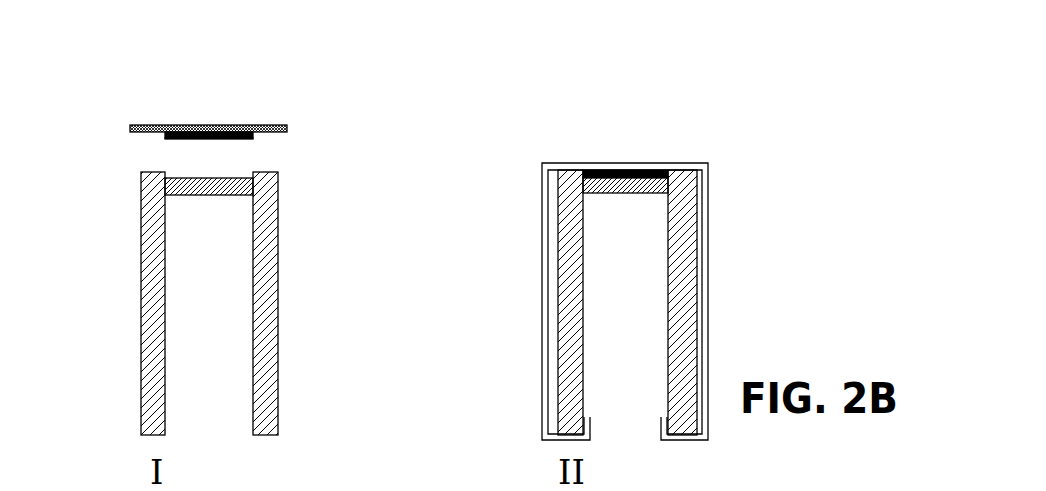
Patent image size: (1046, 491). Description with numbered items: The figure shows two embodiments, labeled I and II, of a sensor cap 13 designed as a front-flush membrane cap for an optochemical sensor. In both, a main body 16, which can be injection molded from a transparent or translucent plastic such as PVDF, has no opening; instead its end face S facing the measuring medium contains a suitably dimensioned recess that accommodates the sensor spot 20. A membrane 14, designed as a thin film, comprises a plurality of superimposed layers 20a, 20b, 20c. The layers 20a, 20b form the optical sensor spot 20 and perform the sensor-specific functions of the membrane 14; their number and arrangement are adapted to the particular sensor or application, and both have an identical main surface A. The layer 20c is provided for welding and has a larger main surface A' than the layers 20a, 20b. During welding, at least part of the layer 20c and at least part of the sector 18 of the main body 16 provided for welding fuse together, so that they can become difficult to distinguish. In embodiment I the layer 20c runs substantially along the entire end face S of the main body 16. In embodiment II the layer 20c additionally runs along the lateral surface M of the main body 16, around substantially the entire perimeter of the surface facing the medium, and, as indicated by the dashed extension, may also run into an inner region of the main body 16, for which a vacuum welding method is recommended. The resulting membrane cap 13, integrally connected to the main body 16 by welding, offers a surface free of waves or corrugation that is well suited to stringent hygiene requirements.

The sensor cap 13 is at (68, 107).
The membrane 14 is at (257, 108).
The main body 16 is at (281, 290).
The sector of the main body provided for welding 18 is at (226, 197).
The sensor spot 20 is at (415, 250).
The layer 20a is at (177, 140).
The layer 20b is at (167, 134).
The layer provided for welding 20c is at (152, 125).
The end face S is at (192, 176).
The main surface A is at (275, 150).
The main surface A' is at (508, 133).
The lateral surface M is at (166, 322).